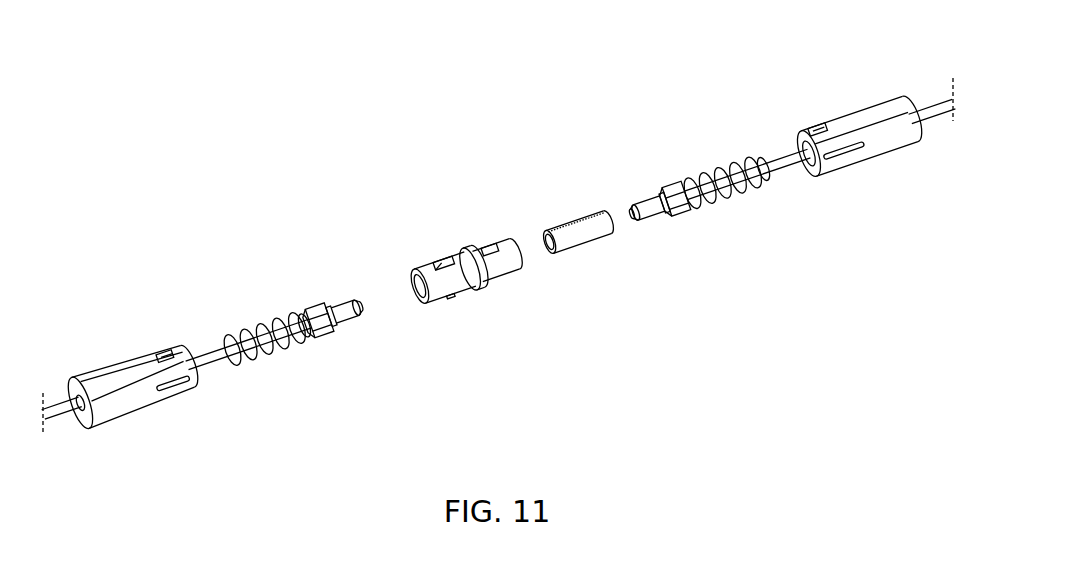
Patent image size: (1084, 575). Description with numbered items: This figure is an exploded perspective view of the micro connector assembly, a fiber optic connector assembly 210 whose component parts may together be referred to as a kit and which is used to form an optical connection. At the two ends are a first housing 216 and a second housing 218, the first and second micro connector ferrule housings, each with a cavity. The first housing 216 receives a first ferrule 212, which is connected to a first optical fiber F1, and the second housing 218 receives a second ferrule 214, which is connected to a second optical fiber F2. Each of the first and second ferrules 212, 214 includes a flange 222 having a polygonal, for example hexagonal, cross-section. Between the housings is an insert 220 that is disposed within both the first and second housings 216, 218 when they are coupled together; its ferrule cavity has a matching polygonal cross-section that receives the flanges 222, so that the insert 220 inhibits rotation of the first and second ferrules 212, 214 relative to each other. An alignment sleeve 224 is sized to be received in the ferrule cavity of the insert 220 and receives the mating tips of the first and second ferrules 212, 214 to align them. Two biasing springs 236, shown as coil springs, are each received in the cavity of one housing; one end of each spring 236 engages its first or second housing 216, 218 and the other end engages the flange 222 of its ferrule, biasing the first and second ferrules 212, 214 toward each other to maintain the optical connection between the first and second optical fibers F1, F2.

The fiber optic connector assembly 210 is at (380, 128).
The first ferrule 212 is at (317, 286).
The second ferrule 214 is at (629, 165).
The first housing 216 is at (99, 338).
The second housing 218 is at (844, 84).
The insert 220 is at (440, 217).
The flange 222 is at (316, 322).
The alignment sleeve 224 is at (546, 204).
The biasing spring 236 is at (226, 303).
The first optical fiber F1 is at (62, 410).
The second optical fiber F2 is at (932, 110).